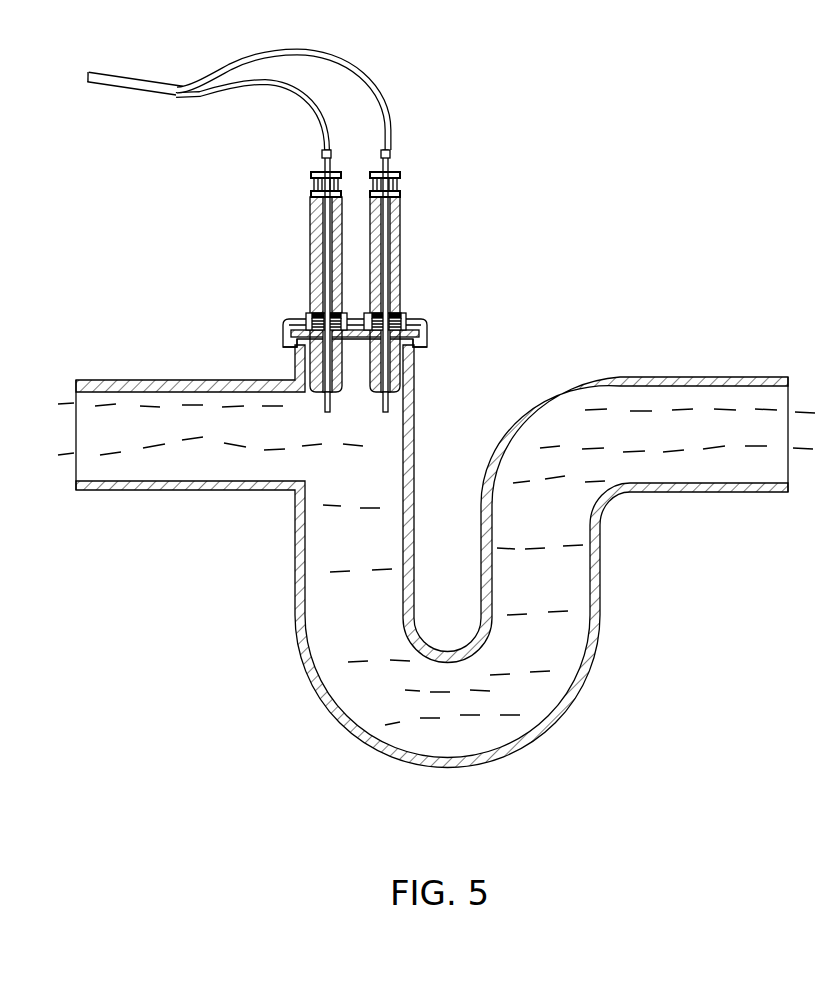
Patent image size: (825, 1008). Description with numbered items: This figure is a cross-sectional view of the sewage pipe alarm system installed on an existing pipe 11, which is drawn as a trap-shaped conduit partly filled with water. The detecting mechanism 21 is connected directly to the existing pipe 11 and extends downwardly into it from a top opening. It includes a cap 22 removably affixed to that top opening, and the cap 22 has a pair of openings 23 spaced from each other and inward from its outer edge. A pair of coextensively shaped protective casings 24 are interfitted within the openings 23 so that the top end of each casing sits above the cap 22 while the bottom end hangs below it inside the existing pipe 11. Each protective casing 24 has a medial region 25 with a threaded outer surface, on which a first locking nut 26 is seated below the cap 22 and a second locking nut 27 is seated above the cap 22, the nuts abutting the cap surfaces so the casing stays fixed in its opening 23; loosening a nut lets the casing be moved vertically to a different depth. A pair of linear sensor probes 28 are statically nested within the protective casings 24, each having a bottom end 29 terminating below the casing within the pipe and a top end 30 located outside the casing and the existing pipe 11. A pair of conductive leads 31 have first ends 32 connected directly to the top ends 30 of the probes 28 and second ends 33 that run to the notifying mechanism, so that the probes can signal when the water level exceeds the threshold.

The existing pipe 11 is at (690, 378).
The detecting mechanism 21 is at (315, 219).
The cap 22 is at (430, 332).
The openings 23 is at (300, 318).
The protective casings 24 is at (289, 225).
The medial region 25 is at (312, 312).
The first locking nut 26 is at (297, 340).
The second locking nut 27 is at (364, 312).
The sensor probes 28 is at (322, 212).
The bottom end 29 is at (328, 410).
The top ends 30 is at (322, 170).
The conductive leads 31 is at (335, 62).
The first ends 32 is at (330, 152).
The second ends 33 is at (196, 88).